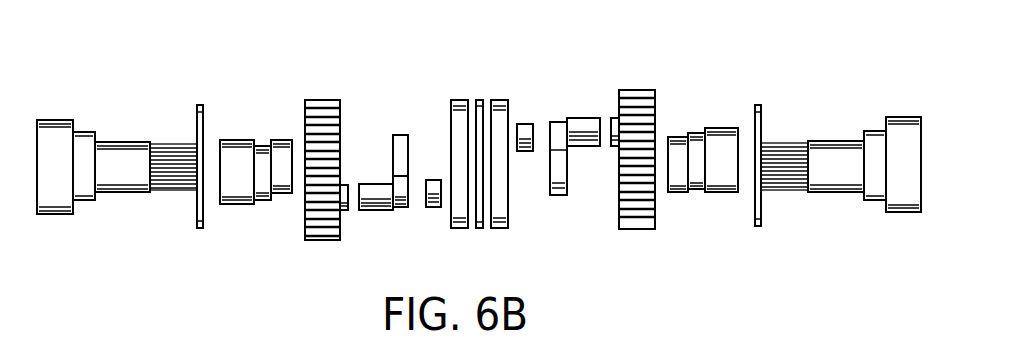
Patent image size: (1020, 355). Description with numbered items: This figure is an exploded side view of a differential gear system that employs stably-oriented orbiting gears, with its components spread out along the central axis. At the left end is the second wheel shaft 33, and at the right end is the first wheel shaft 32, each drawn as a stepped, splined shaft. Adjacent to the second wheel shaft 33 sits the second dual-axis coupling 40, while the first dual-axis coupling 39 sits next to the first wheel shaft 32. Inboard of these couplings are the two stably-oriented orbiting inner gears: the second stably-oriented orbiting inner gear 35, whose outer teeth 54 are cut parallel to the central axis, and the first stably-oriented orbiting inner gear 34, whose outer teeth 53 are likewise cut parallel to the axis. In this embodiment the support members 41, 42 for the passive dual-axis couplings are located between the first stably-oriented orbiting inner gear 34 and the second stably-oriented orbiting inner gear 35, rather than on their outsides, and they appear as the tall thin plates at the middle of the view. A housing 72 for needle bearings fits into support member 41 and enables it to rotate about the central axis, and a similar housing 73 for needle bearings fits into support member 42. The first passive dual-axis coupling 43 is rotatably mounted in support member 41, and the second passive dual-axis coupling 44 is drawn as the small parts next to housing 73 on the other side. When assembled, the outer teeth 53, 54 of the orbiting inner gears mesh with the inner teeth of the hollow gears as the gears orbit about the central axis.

The second wheel shaft 33 is at (110, 174).
The second dual-axis coupling 40 is at (227, 174).
The second stably-oriented orbiting inner gear 35 is at (306, 123).
The outer teeth 54 is at (321, 249).
The second passive dual-axis coupling 44 is at (400, 212).
The housing for needle bearings 73 is at (393, 157).
The support member 42 is at (459, 100).
The support member 41 is at (500, 100).
The housing for needle bearings 72 is at (567, 168).
The first passive dual-axis coupling 43 is at (614, 118).
The outer teeth 53 is at (632, 238).
The first stably-oriented orbiting inner gear 34 is at (656, 112).
The first dual-axis coupling 39 is at (711, 177).
The first wheel shaft 32 is at (826, 177).